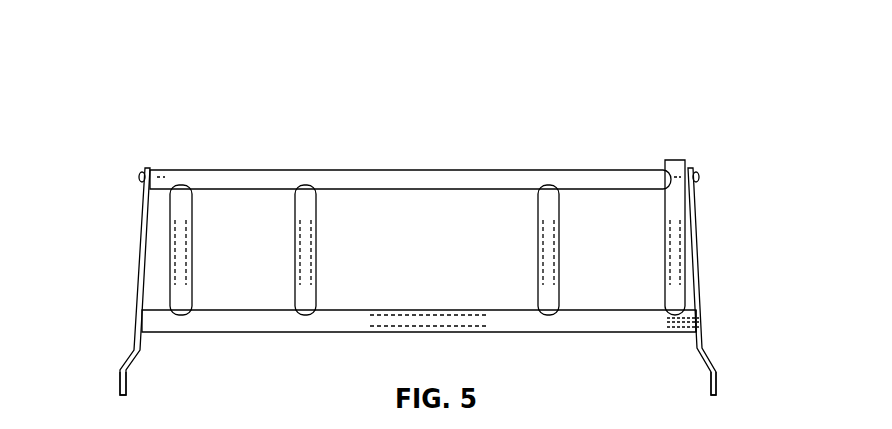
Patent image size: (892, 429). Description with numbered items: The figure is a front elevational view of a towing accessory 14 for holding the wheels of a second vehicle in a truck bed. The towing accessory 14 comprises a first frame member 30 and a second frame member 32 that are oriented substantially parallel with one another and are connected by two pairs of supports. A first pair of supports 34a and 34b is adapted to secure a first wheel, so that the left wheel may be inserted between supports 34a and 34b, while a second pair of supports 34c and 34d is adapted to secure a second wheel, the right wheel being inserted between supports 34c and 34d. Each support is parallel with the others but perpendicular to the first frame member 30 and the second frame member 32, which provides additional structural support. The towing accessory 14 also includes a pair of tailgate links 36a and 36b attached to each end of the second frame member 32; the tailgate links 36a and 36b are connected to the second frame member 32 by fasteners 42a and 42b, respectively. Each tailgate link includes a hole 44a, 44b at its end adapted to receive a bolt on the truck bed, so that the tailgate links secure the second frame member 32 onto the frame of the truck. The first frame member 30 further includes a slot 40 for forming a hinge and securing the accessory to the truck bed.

The towing accessory 14 is at (148, 72).
The first frame member 30 is at (568, 332).
The second frame member 32 is at (257, 175).
The support 34a is at (193, 275).
The support 34b is at (316, 270).
The support 34c is at (538, 222).
The support 34d is at (665, 215).
The tailgate link 36a is at (140, 255).
The tailgate link 36b is at (697, 237).
The slot 40 is at (700, 322).
The fastener 42a is at (140, 176).
The fastener 42b is at (698, 175).
The hole 44a is at (120, 385).
The hole 44b is at (716, 385).